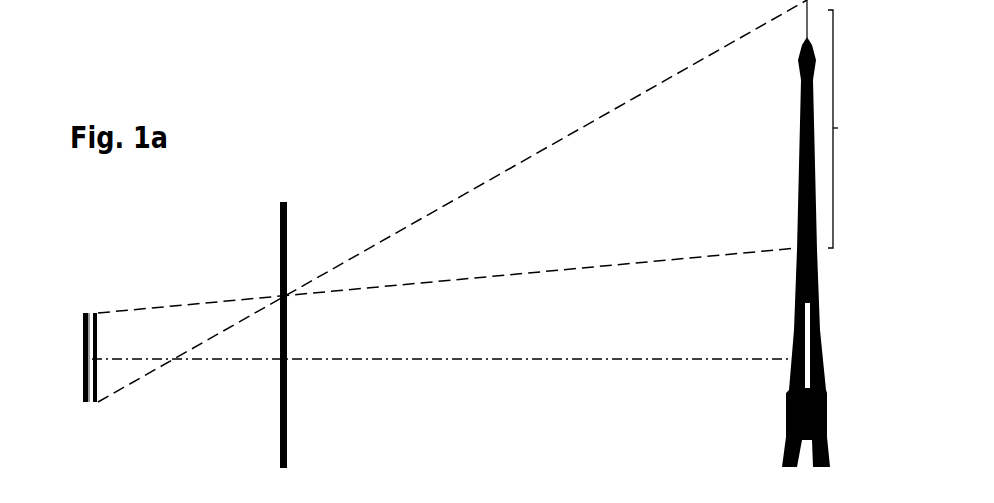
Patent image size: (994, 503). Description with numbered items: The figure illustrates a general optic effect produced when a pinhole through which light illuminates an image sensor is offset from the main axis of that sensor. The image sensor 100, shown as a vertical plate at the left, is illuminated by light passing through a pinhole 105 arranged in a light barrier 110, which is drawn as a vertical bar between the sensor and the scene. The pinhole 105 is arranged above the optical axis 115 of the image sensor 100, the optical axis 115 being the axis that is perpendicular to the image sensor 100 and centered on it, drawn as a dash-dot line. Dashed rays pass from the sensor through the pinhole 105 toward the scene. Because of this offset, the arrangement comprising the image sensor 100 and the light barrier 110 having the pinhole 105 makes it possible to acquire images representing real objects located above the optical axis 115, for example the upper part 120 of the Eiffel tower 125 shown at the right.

The image sensor 100 is at (83, 390).
The pinhole 105 is at (280, 296).
The light barrier 110 is at (280, 438).
The optical axis 115 is at (513, 360).
The upper part 120 is at (859, 129).
The Eiffel tower 125 is at (828, 425).